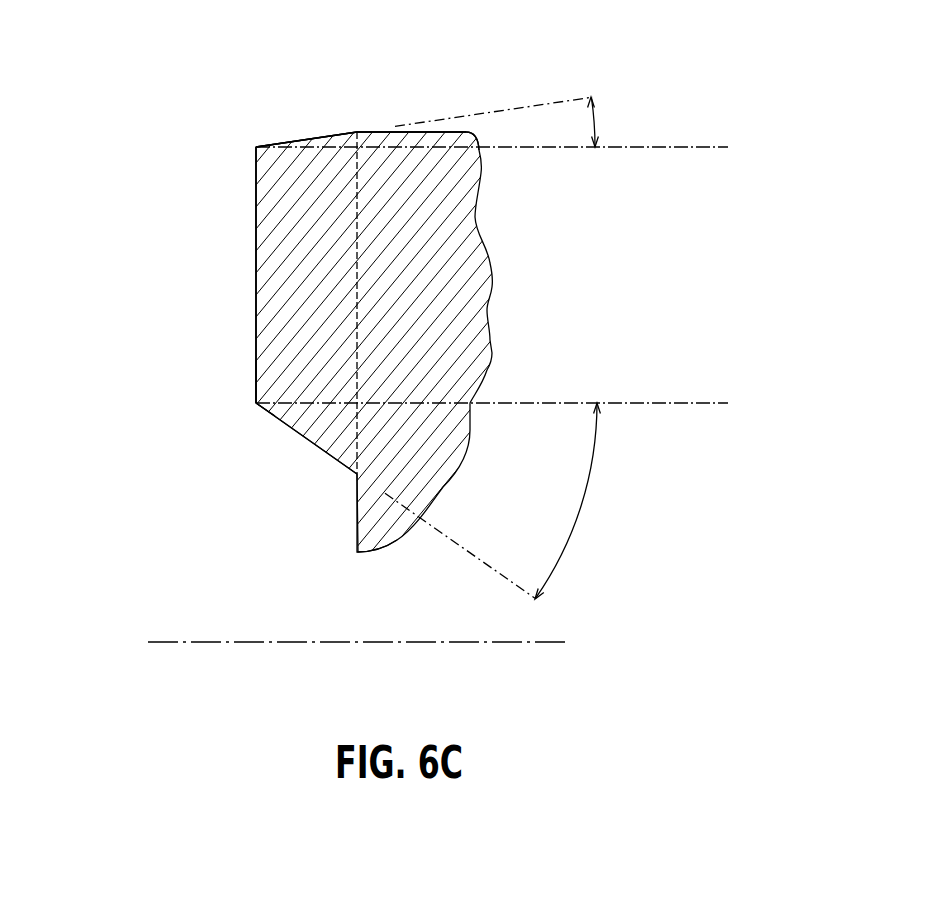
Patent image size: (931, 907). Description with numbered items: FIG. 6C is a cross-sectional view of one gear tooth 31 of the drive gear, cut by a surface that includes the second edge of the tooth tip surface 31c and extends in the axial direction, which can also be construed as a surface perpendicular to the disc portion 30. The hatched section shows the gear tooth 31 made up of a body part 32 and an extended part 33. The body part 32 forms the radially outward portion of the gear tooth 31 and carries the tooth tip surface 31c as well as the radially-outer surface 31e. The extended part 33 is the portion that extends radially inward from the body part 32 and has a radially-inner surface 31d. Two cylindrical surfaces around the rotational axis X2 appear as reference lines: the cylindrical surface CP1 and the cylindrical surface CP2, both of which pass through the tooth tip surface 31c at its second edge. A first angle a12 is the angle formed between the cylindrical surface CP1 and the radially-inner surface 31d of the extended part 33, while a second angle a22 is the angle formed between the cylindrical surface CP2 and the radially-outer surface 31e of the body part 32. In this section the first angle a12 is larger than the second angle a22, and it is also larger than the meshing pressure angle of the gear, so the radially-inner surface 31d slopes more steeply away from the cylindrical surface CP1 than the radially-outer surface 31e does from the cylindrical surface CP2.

The disc portion 30 is at (447, 235).
The gear tooth 31 is at (215, 140).
The radially-outer surface 31e is at (293, 140).
The body part 32 is at (254, 250).
The tooth tip surface 31c is at (256, 373).
The radially-inner surface 31d is at (284, 426).
The extended part 33 is at (322, 465).
The cylindrical surface CP1 is at (524, 406).
The cylindrical surface CP2 is at (528, 151).
The second angle a22 is at (537, 122).
The first angle a12 is at (524, 501).
The rotational axis X2 is at (364, 644).